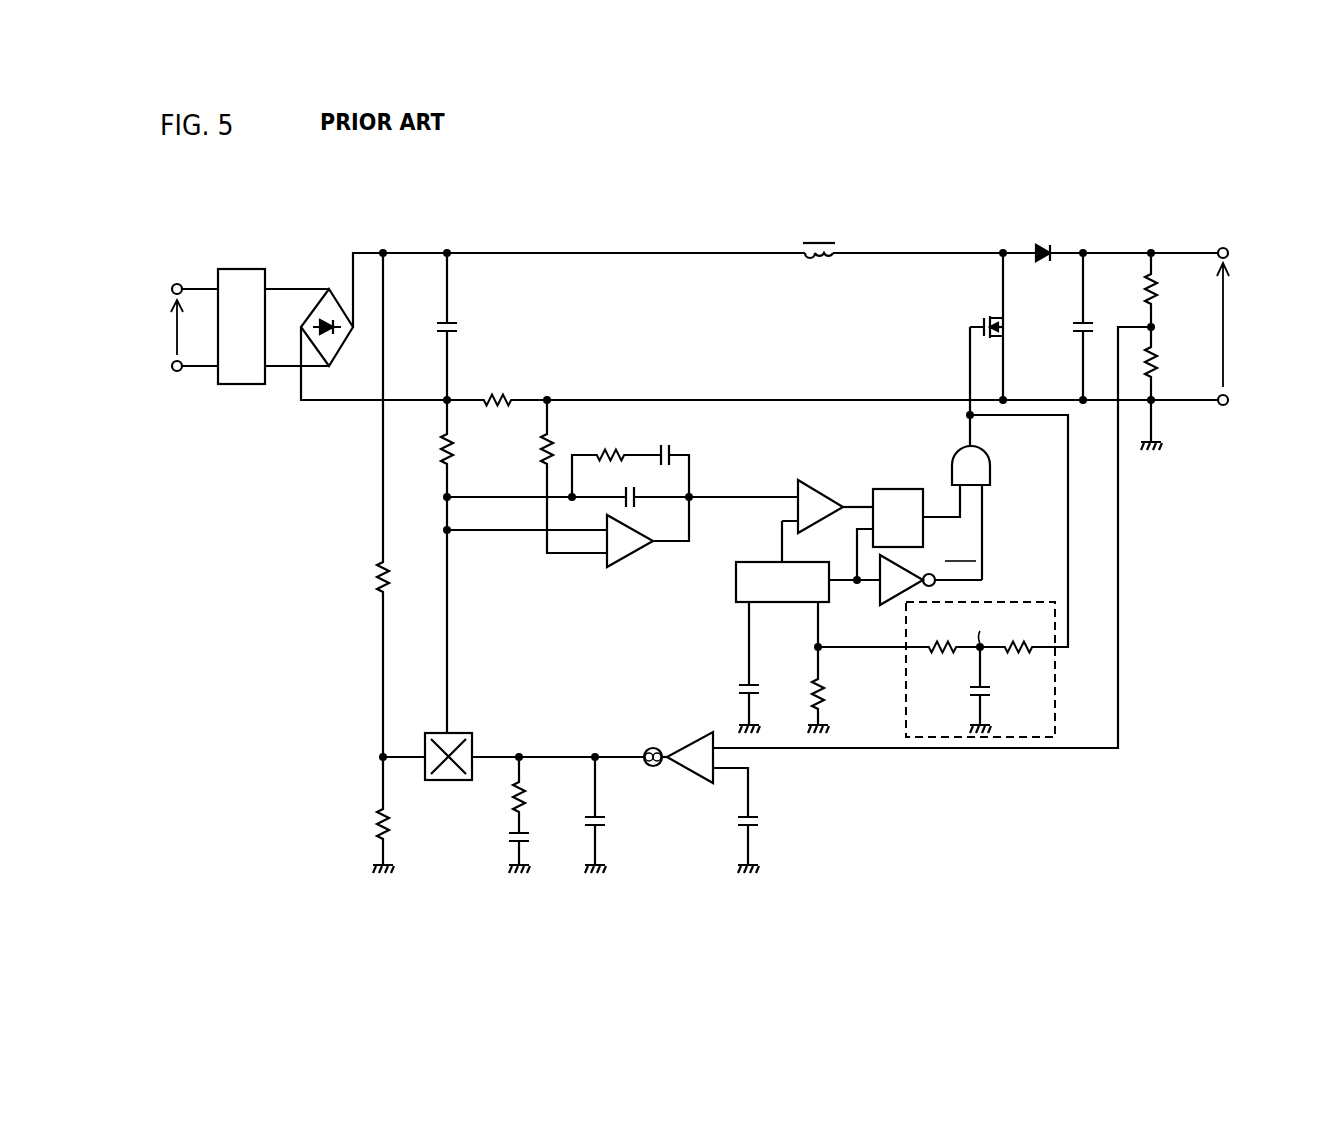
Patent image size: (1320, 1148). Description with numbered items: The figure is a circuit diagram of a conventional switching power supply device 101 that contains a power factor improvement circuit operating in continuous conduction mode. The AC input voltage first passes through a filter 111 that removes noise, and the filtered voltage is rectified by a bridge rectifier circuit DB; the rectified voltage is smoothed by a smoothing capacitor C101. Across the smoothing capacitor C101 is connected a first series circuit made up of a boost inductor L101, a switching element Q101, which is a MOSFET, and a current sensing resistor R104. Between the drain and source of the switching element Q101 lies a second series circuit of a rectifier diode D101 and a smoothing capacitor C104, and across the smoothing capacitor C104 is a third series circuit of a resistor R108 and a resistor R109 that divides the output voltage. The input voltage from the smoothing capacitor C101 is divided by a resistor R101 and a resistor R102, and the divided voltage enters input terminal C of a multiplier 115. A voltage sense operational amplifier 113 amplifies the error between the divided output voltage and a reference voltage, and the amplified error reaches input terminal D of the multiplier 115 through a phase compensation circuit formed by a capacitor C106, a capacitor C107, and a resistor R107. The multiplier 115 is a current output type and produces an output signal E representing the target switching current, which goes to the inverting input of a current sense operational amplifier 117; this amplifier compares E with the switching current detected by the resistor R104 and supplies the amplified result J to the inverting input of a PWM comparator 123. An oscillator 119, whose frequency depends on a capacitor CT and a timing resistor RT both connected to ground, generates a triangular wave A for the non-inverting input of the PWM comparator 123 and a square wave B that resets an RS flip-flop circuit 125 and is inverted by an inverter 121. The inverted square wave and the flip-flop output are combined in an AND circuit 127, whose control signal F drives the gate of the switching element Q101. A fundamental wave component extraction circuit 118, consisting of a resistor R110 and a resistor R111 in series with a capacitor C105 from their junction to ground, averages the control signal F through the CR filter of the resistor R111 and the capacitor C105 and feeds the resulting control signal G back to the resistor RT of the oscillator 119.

The switching power supply device 101 is at (470, 181).
The filter 111 is at (241, 268).
The voltage sense operational amplifier 113 is at (695, 742).
The multiplier 115 is at (465, 733).
The current sense operational amplifier 117 is at (626, 524).
The fundamental wave component extraction circuit 118 is at (1039, 703).
The oscillator 119 is at (802, 561).
The inverter 121 is at (880, 604).
The PWM comparator 123 is at (815, 486).
The RS flip-flop circuit 125 is at (897, 488).
The AND circuit 127 is at (988, 460).
The bridge rectifier circuit DB is at (313, 316).
The smoothing capacitor C101 is at (442, 323).
The resistor R101 is at (389, 568).
The resistor R102 is at (389, 811).
The resistor R104 is at (497, 396).
The resistor R107 is at (522, 786).
The capacitor C106 is at (522, 832).
The capacitor C107 is at (601, 817).
The capacitor CT is at (752, 686).
The resistor RT is at (820, 682).
The resistor R110 is at (944, 658).
The resistor R111 is at (1019, 658).
The capacitor C105 is at (973, 700).
The boost inductor L101 is at (822, 263).
The switching element Q101 is at (988, 314).
The rectifier diode D101 is at (1043, 263).
The smoothing capacitor C104 is at (1089, 323).
The resistor R108 is at (1156, 280).
The resistor R109 is at (1156, 353).